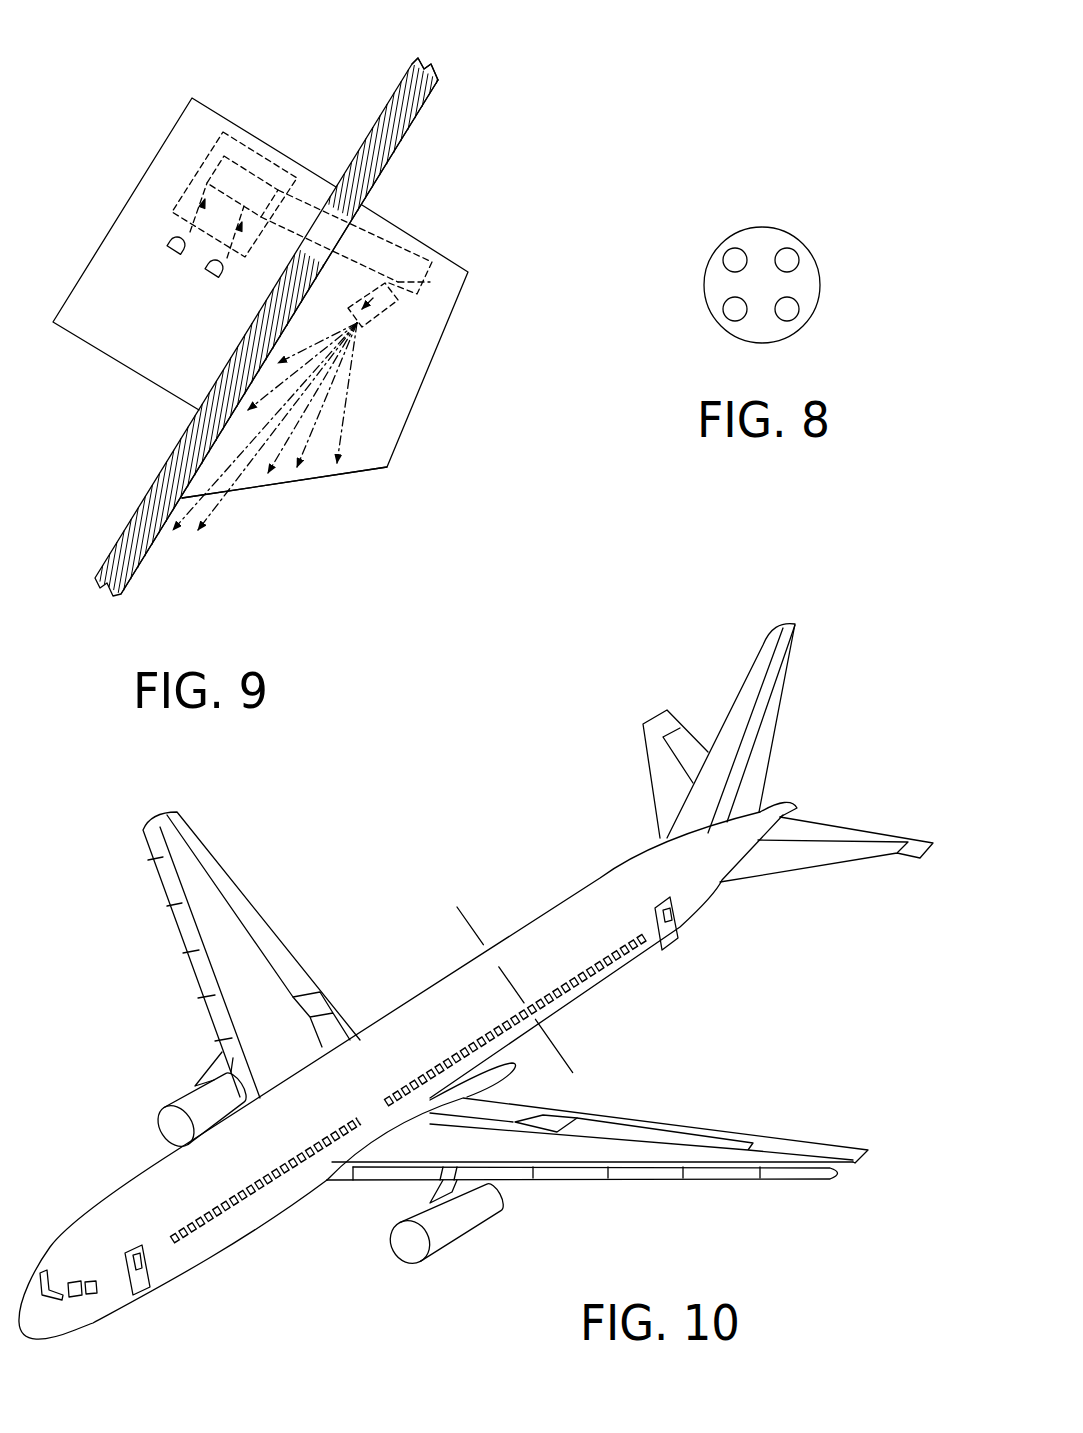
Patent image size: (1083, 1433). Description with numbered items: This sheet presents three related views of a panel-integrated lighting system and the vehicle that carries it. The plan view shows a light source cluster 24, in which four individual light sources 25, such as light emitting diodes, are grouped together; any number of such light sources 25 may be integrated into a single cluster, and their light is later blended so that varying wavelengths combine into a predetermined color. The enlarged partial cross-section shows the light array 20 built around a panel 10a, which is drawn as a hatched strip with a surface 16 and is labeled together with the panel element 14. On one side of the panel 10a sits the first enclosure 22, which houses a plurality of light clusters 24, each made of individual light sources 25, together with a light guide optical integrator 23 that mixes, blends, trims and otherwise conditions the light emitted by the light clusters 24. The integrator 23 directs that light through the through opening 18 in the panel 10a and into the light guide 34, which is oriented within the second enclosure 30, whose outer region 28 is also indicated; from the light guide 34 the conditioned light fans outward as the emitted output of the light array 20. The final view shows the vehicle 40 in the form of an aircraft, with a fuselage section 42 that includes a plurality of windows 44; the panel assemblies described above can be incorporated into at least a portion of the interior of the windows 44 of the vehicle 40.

In FIG. 9, the panel 10a is at (432, 72).
In FIG. 9, the panel / wall 14 is at (372, 127).
In FIG. 9, the outer surface of panel 16 is at (419, 110).
In FIG. 9, the through opening 18 is at (357, 222).
In FIG. 9, the light array 20 is at (148, 383).
In FIG. 9, the first enclosure 22 is at (150, 167).
In FIG. 9, the light guide optical integrator 23 is at (195, 187).
In FIG. 9, the light source cluster 24 is at (170, 242).
In FIG. 8, the light source cluster 24 is at (704, 280).
In FIG. 8, the light source 25 is at (799, 257).
In FIG. 9, the outer housing 28 is at (339, 440).
In FIG. 9, the second enclosure 30 is at (452, 262).
In FIG. 9, the light guide 34 is at (423, 297).
In FIG. 10, the vehicle 40 is at (476, 982).
In FIG. 10, the fuselage section 42 is at (410, 1022).
In FIG. 10, the windows 44 is at (592, 978).